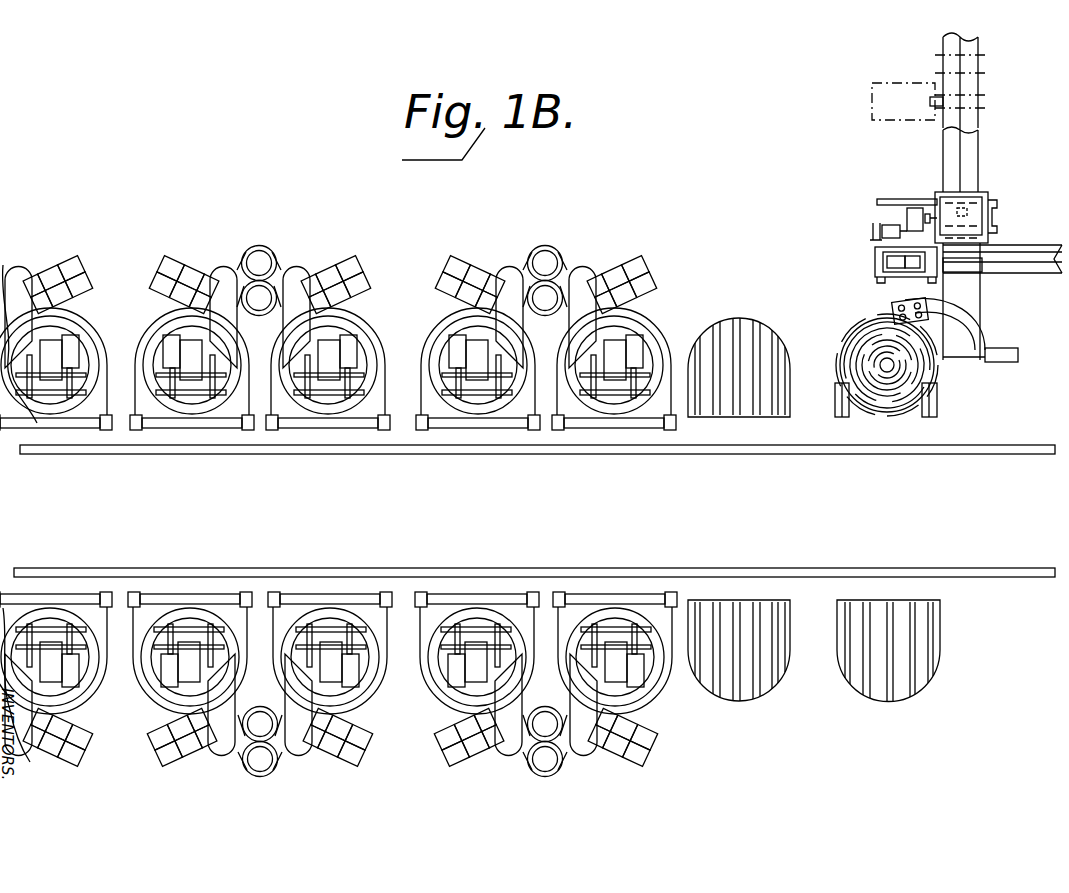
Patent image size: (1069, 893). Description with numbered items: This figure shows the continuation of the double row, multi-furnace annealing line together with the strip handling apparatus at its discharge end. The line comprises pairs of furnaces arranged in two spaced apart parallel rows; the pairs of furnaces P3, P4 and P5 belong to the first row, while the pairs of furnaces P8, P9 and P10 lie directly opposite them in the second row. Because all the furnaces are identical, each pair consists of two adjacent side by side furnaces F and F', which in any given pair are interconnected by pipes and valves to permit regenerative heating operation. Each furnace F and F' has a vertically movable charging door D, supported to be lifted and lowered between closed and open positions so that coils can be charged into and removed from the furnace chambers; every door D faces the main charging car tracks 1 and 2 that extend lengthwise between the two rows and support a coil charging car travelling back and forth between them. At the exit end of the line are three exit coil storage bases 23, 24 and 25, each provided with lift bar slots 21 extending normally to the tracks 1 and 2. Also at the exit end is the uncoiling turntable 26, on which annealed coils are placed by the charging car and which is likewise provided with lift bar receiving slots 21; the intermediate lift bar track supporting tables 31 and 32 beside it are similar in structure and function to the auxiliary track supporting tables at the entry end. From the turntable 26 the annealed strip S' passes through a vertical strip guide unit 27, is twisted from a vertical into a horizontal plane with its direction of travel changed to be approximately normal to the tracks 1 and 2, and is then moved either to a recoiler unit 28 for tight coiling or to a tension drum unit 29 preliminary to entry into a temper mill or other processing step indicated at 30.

The main charging car track 1 is at (283, 452).
The main charging car track 2 is at (305, 568).
The charging door D is at (72, 428).
The furnace F is at (325, 511).
The furnace F' is at (351, 511).
The pair of furnaces P3 is at (36, 769).
The pair of furnaces P4 is at (246, 782).
The pair of furnaces P5 is at (536, 783).
The pair of furnaces P8 is at (19, 258).
The pair of furnaces P9 is at (255, 241).
The pair of furnaces P10 is at (568, 232).
The lift bar slot 21 is at (782, 348).
The exit coil storage base 23 is at (730, 322).
The exit coil storage base 24 is at (738, 698).
The exit coil storage base 25 is at (918, 650).
The uncoiling turntable 26 is at (840, 352).
The vertical strip guide unit 27 is at (895, 303).
The recoiler unit 28 is at (883, 268).
The tension drum unit 29 is at (912, 208).
The temper mill or other processing step 30 is at (908, 86).
The intermediate lift bar track supporting table 31 is at (835, 405).
The intermediate lift bar track supporting table 32 is at (937, 407).
The annealed strip S' is at (931, 302).